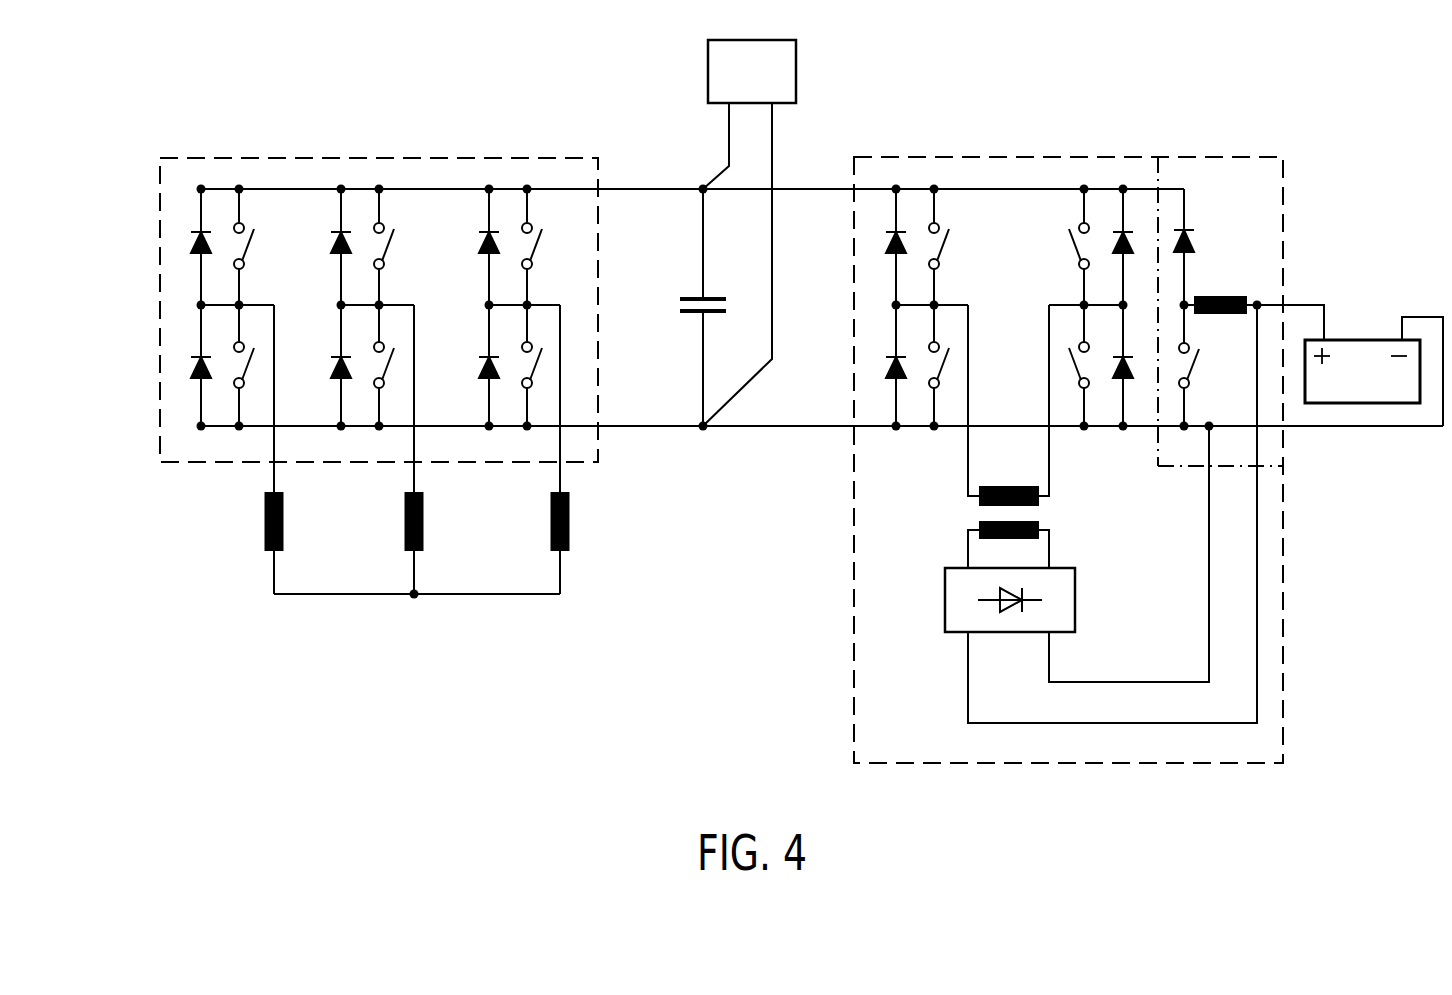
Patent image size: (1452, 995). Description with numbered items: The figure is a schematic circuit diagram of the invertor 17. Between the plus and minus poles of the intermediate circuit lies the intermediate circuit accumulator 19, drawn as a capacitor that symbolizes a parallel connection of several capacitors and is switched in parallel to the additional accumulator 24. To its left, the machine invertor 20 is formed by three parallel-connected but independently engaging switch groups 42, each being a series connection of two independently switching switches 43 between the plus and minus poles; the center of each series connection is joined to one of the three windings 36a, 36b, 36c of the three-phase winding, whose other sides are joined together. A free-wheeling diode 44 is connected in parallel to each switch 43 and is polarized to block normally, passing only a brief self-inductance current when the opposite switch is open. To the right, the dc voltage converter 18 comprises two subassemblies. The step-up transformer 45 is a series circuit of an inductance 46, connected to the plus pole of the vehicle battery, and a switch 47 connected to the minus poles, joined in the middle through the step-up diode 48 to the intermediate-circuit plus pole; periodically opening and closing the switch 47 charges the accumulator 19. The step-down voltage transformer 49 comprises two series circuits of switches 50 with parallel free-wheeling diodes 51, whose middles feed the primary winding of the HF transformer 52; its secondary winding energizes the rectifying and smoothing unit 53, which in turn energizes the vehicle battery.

The invertor 17 is at (1348, 116).
The dc voltage converter 18 is at (1038, 152).
The intermediate circuit accumulator 19 is at (688, 292).
The machine invertor 20 is at (432, 152).
The additional accumulator 24 is at (749, 233).
The winding 36a is at (265, 526).
The winding 36b is at (423, 525).
The winding 36c is at (570, 525).
The switch group 42 is at (223, 183).
The switch 43 is at (248, 246).
The free-wheeling diode 44 is at (192, 243).
The step-up transformer 45 is at (1262, 192).
The inductance 46 is at (1213, 297).
The switch 47 is at (1192, 365).
The step-up diode 48 is at (1196, 243).
The step-down voltage transformer 49 is at (880, 535).
The switch 50 is at (945, 250).
The free-wheeling diode 51 is at (886, 367).
The HF transformer 52 is at (1033, 512).
The rectifying and smoothing unit 53 is at (1077, 600).